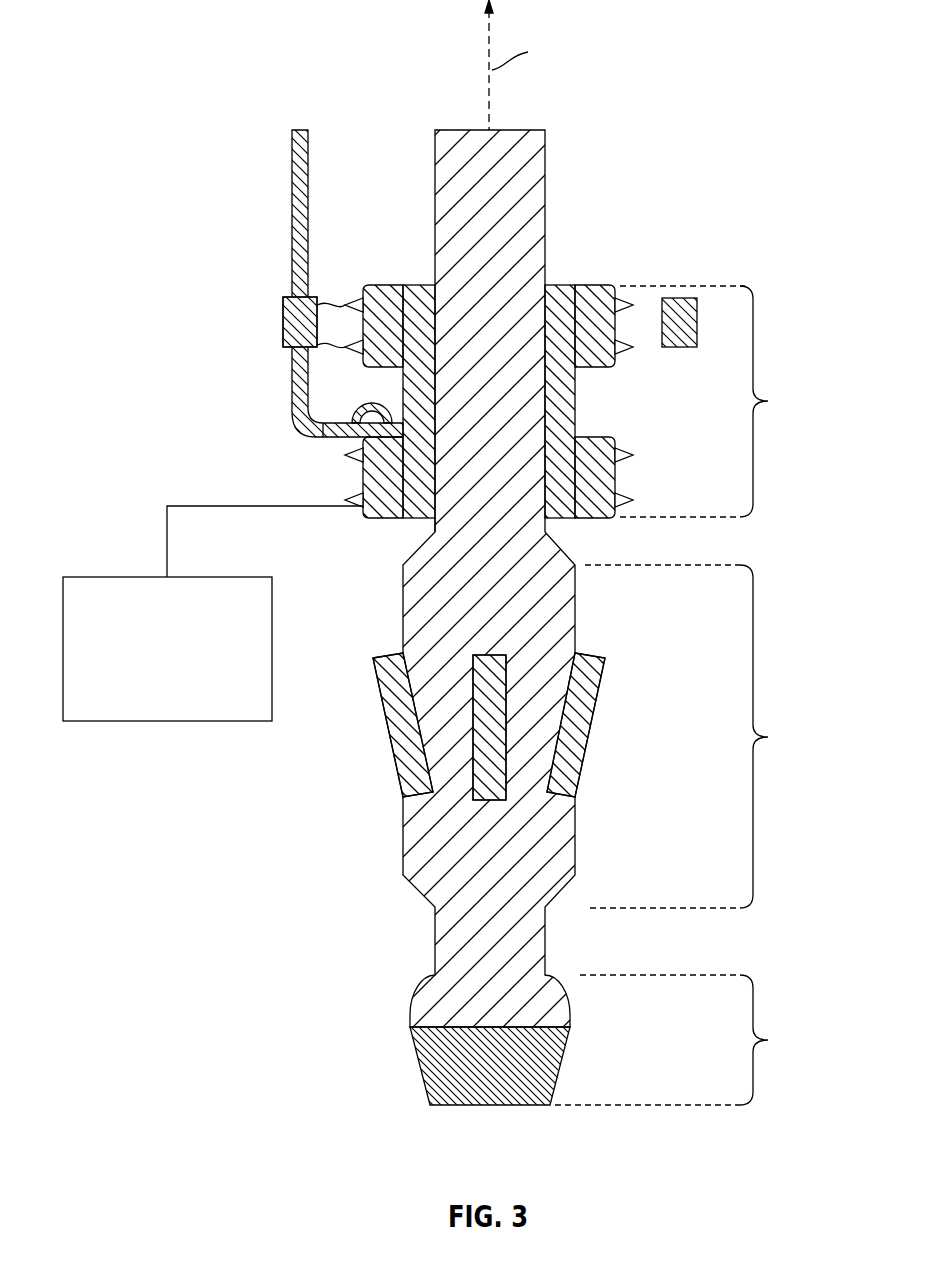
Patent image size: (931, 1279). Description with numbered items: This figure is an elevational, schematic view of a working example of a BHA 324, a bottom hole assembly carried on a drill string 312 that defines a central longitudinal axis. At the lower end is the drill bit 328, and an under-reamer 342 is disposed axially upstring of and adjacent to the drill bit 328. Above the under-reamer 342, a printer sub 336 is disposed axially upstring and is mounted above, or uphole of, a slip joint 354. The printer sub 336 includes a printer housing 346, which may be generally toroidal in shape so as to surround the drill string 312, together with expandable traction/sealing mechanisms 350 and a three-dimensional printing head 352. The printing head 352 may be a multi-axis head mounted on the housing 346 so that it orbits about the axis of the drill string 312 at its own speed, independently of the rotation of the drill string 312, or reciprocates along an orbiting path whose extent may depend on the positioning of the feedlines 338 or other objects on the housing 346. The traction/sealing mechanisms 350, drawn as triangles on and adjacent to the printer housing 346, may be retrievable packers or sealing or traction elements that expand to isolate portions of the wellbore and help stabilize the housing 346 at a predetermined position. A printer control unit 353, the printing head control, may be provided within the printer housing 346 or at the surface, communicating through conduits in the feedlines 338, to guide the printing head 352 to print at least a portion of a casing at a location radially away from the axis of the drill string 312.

The drill string 312 is at (435, 186).
The BHA 324 is at (609, 104).
The drill bit 328 is at (613, 1040).
The printer sub 336 is at (589, 376).
The feedlines 338 is at (285, 203).
The under-reamer 342 is at (594, 736).
The printer housing 346 is at (600, 286).
The traction/sealing mechanisms 350 is at (290, 345).
The 3D printing head 352 is at (354, 411).
The printer control unit 353 is at (122, 576).
The slip joint 354 is at (425, 526).